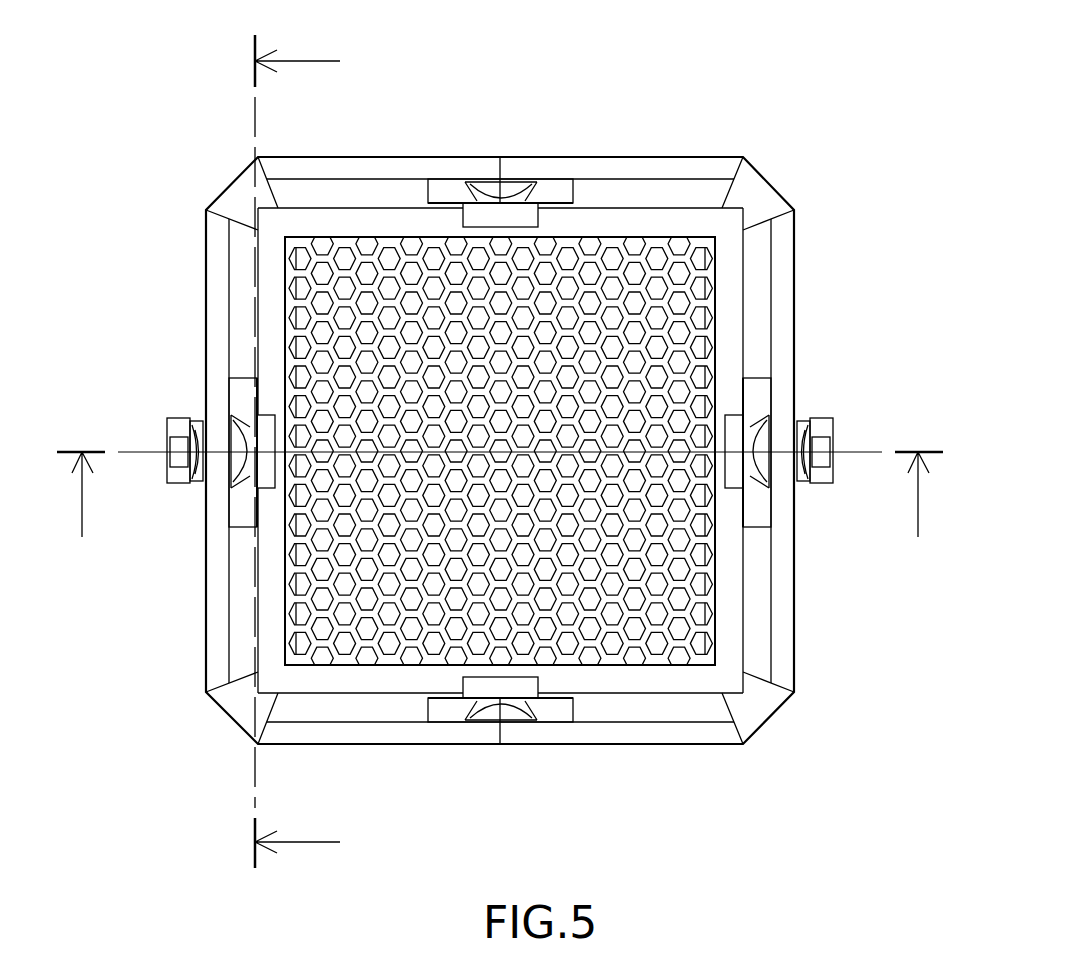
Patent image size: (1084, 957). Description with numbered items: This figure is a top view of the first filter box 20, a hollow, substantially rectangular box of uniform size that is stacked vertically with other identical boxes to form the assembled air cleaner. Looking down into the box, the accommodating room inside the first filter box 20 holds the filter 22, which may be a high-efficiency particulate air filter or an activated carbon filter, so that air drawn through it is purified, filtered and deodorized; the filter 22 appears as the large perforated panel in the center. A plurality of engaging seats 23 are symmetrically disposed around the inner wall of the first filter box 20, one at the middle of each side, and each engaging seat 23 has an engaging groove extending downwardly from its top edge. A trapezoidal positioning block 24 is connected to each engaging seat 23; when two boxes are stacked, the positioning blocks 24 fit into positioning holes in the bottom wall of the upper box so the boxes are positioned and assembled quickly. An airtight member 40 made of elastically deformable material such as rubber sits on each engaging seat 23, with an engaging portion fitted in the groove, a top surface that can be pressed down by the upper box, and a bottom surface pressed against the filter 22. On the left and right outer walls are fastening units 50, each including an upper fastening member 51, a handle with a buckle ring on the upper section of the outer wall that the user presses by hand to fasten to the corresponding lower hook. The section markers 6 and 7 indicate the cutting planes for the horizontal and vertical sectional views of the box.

The first filter box 20 is at (712, 157).
The filter 22 is at (633, 223).
The engaging seat 23 is at (580, 187).
The positioning block 24 is at (515, 187).
The airtight member 40 is at (460, 190).
The fastening unit 50 is at (163, 425).
The upper fastening member 51 is at (815, 417).
The section line 6- 6 is at (497, 495).
The section line 7- 7 is at (297, 443).